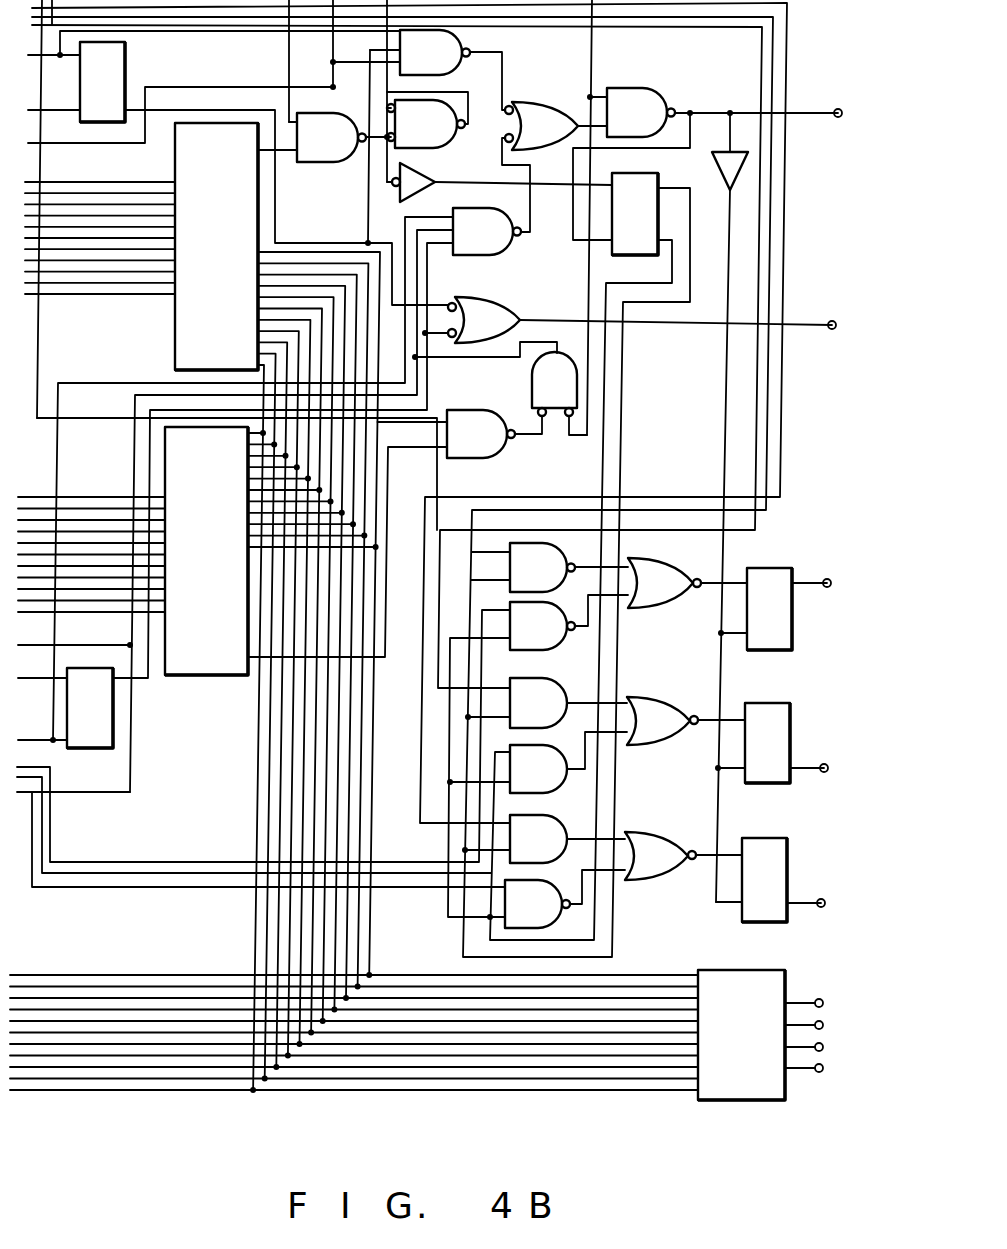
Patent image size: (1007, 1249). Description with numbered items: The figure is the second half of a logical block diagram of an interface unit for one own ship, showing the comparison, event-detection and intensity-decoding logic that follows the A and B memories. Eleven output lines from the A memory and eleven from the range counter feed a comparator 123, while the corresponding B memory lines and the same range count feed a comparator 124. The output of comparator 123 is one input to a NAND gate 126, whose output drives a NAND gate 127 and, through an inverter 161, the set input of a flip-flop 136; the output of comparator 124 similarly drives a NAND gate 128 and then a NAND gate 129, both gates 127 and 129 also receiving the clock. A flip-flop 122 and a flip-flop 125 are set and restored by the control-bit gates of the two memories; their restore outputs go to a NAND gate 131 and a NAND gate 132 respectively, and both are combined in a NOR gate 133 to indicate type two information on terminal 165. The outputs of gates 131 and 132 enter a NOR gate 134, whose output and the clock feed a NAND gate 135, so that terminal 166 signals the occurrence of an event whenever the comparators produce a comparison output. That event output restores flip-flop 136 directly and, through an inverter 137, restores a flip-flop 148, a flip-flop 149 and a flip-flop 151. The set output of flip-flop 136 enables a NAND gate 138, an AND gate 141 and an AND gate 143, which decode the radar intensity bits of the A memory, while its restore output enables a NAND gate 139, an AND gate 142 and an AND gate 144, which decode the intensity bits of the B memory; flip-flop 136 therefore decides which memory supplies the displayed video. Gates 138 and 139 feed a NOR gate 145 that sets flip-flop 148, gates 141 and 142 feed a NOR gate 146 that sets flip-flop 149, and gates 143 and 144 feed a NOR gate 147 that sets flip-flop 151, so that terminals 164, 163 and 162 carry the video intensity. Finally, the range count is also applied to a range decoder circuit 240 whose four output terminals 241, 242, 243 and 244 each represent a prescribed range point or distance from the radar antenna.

The flip-flop 122 is at (120, 72).
The comparator 123 is at (174, 340).
The comparator 124 is at (182, 660).
The flip-flop 125 is at (84, 740).
The NAND gate 126 is at (318, 152).
The NAND gate 127 is at (435, 133).
The NAND gate 128 is at (480, 398).
The NAND gate 129 is at (539, 373).
The NAND gate 131 is at (447, 62).
The NAND gate 132 is at (483, 218).
The NOR gate 133 is at (483, 305).
The NOR gate 134 is at (552, 118).
The NAND gate 135 is at (636, 96).
The flip-flop 136 is at (647, 187).
The inverter 137 is at (723, 166).
The NAND gate 138 is at (558, 535).
The NAND gate 139 is at (538, 635).
The AND gate 141 is at (558, 677).
The AND gate 142 is at (540, 780).
The AND gate 143 is at (543, 850).
The AND gate 144 is at (538, 918).
The NOR gate 145 is at (655, 575).
The NOR gate 146 is at (652, 712).
The NOR gate 147 is at (648, 848).
The flip-flop 148 is at (765, 578).
The flip-flop 149 is at (757, 715).
The flip-flop 151 is at (757, 842).
The inverter 161 is at (420, 180).
The terminal 162 is at (823, 898).
The terminal 163 is at (834, 753).
The terminal 164 is at (837, 568).
The terminal 165 is at (842, 310).
The terminal 166 is at (848, 98).
The range decoder circuit 240 is at (730, 978).
The output terminal 241 is at (822, 999).
The output terminal 242 is at (822, 1021).
The output terminal 243 is at (822, 1043).
The output terminal 244 is at (822, 1064).